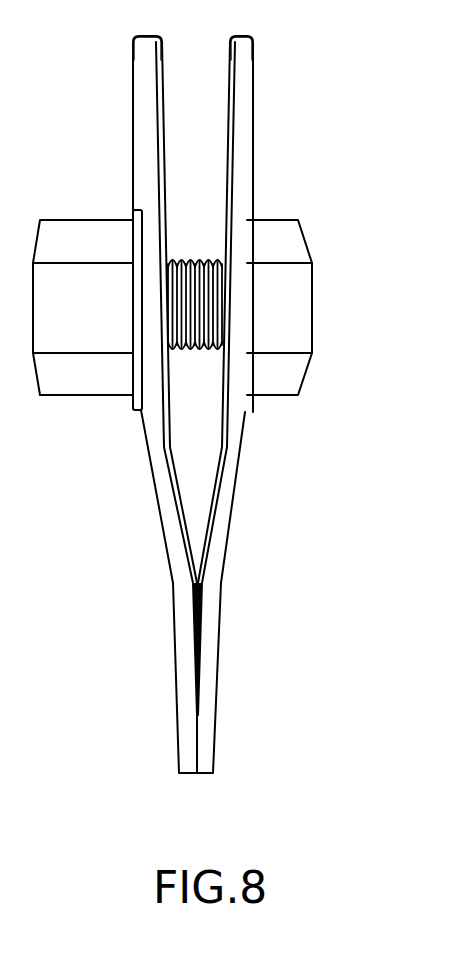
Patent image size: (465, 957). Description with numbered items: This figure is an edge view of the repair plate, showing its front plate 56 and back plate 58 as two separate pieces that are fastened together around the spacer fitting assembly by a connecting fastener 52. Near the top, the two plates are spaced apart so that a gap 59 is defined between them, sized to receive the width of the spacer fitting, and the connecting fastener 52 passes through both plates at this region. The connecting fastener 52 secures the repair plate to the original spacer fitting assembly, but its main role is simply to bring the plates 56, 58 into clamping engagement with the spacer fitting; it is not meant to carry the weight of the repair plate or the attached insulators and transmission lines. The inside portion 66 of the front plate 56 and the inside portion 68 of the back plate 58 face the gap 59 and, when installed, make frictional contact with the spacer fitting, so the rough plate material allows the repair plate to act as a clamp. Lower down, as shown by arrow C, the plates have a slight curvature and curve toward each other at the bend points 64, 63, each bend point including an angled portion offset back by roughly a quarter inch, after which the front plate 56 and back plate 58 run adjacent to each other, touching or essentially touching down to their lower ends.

The connecting fastener 52 is at (313, 325).
The front plate 56 is at (133, 98).
The back plate 58 is at (253, 97).
The gap 59 is at (178, 139).
The bend point 63 is at (200, 584).
The bend point 64 is at (200, 584).
The inside portion 66 is at (162, 76).
The inside portion 68 is at (230, 140).
The arrow indicating curvature C is at (277, 463).